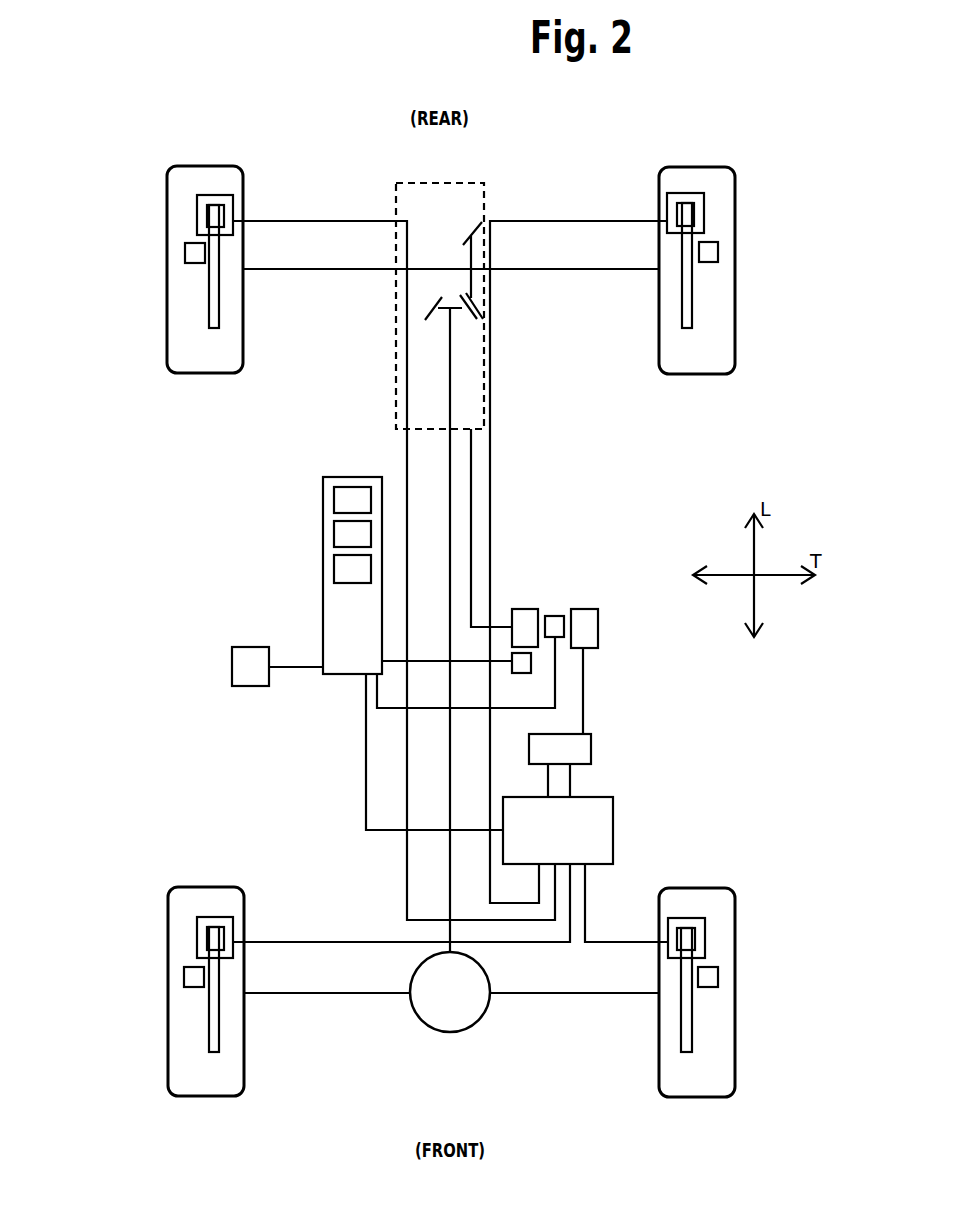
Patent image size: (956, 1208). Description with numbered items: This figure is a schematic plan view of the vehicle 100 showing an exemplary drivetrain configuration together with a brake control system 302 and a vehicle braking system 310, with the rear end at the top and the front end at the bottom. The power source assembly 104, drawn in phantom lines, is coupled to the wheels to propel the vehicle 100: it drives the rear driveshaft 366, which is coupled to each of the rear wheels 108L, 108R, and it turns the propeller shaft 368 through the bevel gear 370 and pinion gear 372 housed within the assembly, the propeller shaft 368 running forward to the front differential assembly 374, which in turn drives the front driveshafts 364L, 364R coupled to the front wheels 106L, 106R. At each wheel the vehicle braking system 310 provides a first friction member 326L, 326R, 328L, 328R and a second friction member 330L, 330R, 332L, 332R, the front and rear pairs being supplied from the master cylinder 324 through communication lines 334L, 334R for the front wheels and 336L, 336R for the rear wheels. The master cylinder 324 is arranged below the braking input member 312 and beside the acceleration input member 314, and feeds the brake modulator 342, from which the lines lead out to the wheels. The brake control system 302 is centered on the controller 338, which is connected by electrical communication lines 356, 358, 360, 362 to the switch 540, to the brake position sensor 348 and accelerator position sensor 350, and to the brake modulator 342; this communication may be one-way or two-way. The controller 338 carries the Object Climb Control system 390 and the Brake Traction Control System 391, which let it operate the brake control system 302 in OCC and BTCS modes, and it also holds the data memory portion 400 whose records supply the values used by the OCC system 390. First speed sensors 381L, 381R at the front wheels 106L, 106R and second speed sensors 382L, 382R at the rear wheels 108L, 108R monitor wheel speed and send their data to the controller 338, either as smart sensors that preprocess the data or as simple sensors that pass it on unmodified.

The vehicle 100 is at (234, 542).
The brake control system 302 is at (266, 615).
The vehicle braking system 310 is at (221, 616).
The power source assembly 104 is at (396, 415).
The front wheel 106R is at (205, 1097).
The front wheel 106L is at (690, 1098).
The rear wheel 108R is at (208, 375).
The rear wheel 108L is at (695, 375).
The braking input member 312 is at (587, 607).
The acceleration input member 314 is at (520, 607).
The master cylinder 324 is at (592, 752).
The first friction member 326R is at (209, 1015).
The first friction member 326L is at (693, 1015).
The first friction member 328R is at (209, 295).
The first friction member 328L is at (694, 292).
The second friction member 330R is at (217, 925).
The second friction member 330L is at (685, 925).
The second friction member 332R is at (218, 195).
The second friction member 332L is at (684, 194).
The communication line 334R is at (298, 940).
The communication line 334L is at (626, 940).
The communication line 336R is at (297, 220).
The communication line 336L is at (590, 220).
The controller 338 is at (340, 676).
The brake modulator 342 is at (614, 815).
The position sensor 348 is at (554, 614).
The position sensor 350 is at (533, 665).
The electrical communication line 356 is at (292, 670).
The electrical communication line 358 is at (429, 659).
The electrical communication line 360 is at (434, 710).
The electrical communication line 362 is at (388, 832).
The front driveshaft 364R is at (284, 995).
The front driveshaft 364L is at (606, 995).
The rear driveshaft 366 is at (285, 270).
The propeller shaft 368 is at (448, 512).
The bevel gear 370 is at (474, 291).
The pinion gear 372 is at (425, 310).
The front differential assembly 374 is at (449, 1033).
The first speed sensor 381R is at (184, 975).
The first speed sensor 381L is at (718, 975).
The second speed sensor 382R is at (185, 252).
The second speed sensor 382L is at (718, 250).
The Object Climb Control (OCC) system 390 is at (334, 533).
The Brake Traction Control System (BTCS) 391 is at (334, 567).
The data memory portion 400 is at (334, 500).
The switch 540 is at (232, 674).